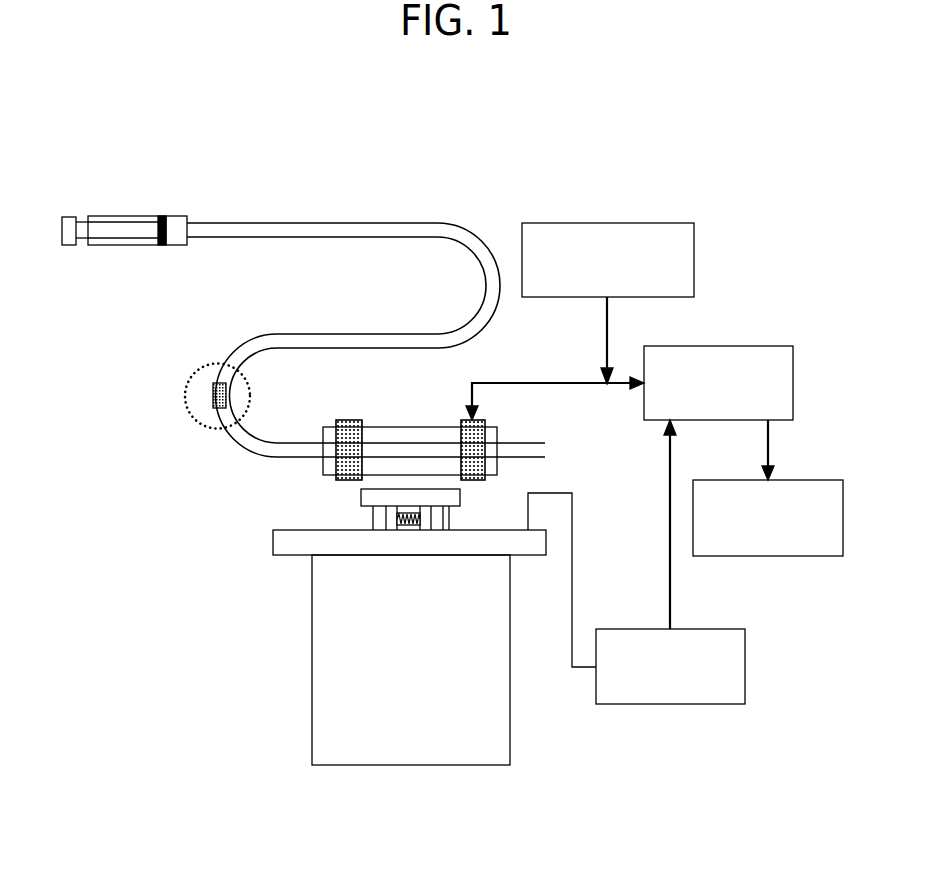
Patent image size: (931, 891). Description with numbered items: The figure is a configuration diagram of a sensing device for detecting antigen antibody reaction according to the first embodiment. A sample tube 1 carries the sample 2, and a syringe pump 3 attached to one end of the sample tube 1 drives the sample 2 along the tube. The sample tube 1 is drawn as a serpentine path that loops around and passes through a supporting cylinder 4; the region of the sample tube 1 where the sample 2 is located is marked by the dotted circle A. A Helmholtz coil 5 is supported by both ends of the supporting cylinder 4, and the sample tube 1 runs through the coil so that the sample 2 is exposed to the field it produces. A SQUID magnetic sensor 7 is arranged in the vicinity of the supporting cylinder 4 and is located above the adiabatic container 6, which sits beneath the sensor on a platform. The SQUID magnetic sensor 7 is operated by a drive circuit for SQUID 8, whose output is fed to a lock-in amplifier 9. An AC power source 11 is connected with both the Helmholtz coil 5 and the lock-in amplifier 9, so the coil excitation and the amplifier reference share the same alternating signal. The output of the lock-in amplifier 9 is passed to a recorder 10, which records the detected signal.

The sample tube 1 is at (345, 223).
The sample 2 is at (212, 398).
The syringe pump 3 is at (138, 226).
The supporting cylinder 4 is at (422, 430).
The Helmholtz coil 5 is at (349, 420).
The adiabatic container 6 is at (312, 640).
The SQUID magnetic sensor 7 is at (398, 520).
The drive circuit for SQUID 8 is at (722, 629).
The lock-in amplifier 9 is at (768, 346).
The recorder 10 is at (815, 480).
The AC power source 11 is at (656, 223).
The region A is at (195, 377).